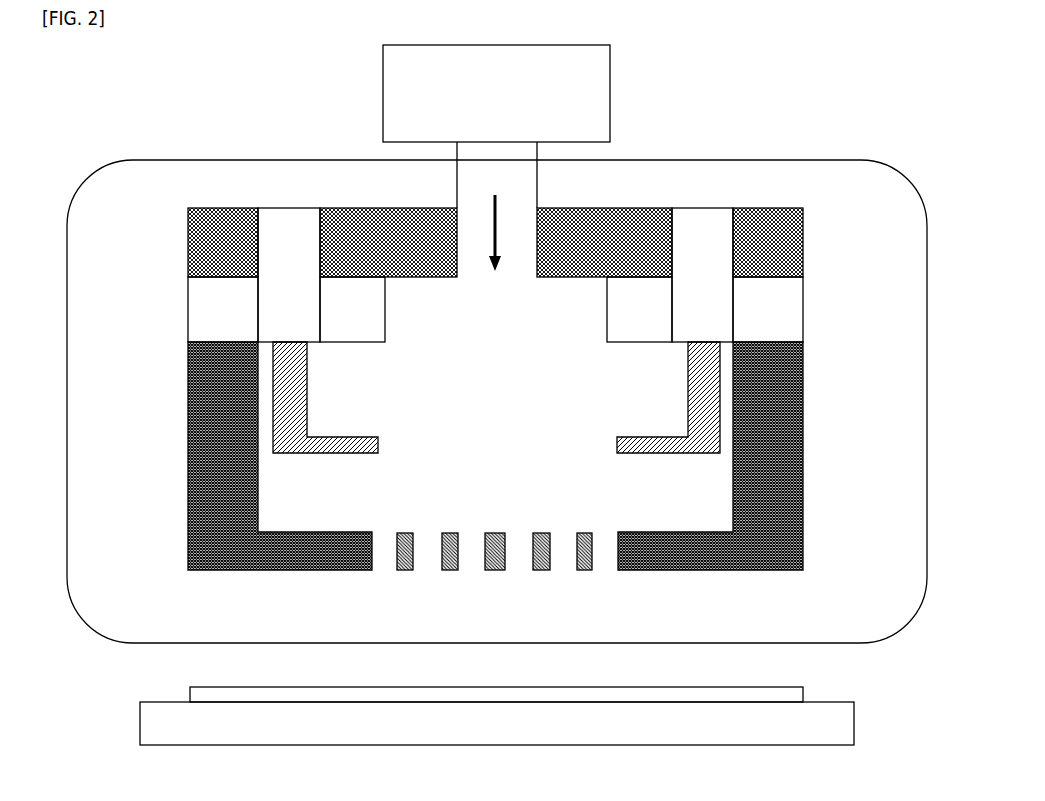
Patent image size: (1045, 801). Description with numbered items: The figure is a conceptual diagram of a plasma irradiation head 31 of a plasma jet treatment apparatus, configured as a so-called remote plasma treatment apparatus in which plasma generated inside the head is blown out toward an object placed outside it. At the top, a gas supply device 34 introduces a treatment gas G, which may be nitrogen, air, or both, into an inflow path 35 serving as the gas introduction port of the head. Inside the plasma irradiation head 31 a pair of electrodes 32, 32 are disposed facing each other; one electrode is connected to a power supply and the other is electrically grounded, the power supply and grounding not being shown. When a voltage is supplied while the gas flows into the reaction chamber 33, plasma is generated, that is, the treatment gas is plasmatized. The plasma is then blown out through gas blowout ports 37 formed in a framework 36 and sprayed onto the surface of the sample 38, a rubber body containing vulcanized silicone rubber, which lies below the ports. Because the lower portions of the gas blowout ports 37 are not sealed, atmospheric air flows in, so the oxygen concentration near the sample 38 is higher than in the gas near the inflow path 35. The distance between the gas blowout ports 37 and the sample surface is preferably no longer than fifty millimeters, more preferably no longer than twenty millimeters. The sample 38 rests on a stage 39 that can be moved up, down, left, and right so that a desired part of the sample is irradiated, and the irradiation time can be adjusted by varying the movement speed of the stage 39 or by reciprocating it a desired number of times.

The plasma irradiation head 31 is at (497, 396).
The electrode 32 is at (292, 433).
The reaction chamber 33 is at (705, 505).
The gas supply device 34 is at (496, 93).
The inflow path 35 is at (519, 240).
The framework 36 is at (245, 552).
The gas blowout ports 37 is at (385, 562).
The sample 38 is at (763, 690).
The stage 39 is at (803, 720).